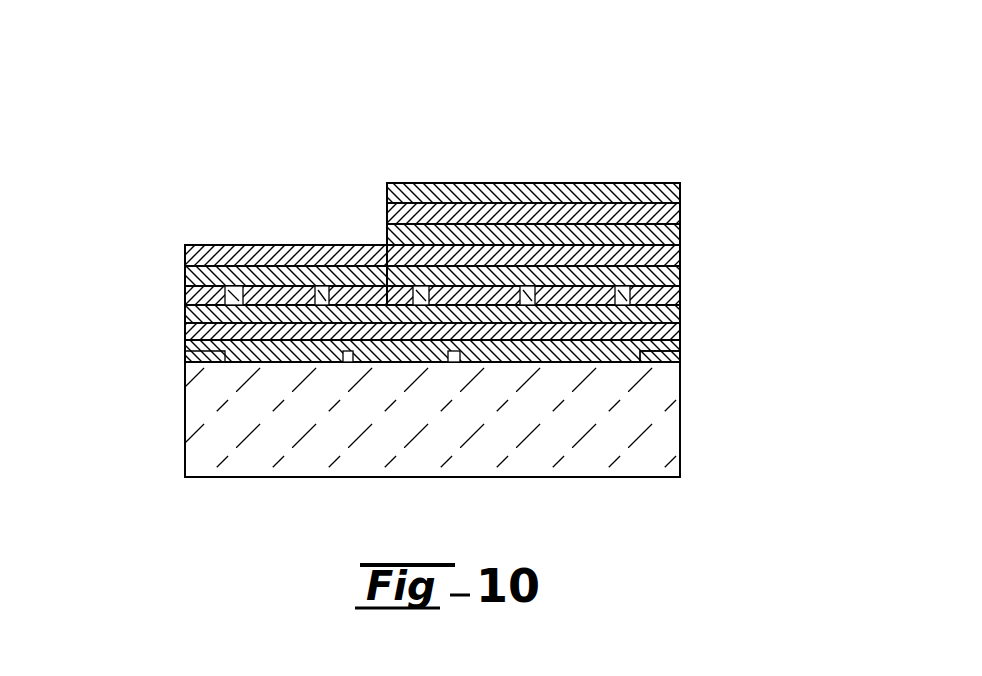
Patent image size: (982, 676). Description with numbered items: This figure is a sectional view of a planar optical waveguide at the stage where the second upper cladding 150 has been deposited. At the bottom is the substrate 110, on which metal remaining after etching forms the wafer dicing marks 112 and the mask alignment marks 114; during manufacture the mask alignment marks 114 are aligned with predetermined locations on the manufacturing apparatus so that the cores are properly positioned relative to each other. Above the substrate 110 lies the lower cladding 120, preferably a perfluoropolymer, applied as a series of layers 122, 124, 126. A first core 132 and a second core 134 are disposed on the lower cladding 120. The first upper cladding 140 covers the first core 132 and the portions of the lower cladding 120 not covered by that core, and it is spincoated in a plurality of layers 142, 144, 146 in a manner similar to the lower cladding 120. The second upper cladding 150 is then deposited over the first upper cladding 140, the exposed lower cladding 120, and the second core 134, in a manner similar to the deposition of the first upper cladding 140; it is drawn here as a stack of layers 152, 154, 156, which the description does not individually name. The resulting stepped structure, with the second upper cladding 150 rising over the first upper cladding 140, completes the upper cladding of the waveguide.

The substrate 110 is at (680, 443).
The wafer dicing marks 112 is at (185, 356).
The mask alignment marks 114 is at (333, 365).
The lower cladding 120 is at (690, 305).
The lower cladding layer 122 is at (680, 388).
The lower cladding layer 124 is at (185, 345).
The lower cladding layer 126 is at (185, 332).
The first core 132 is at (420, 288).
The second core 134 is at (328, 287).
The first upper cladding 140 is at (690, 245).
The first top cladding layer 142 is at (640, 275).
The first top cladding layer 144 is at (540, 258).
The first top cladding layer 146 is at (458, 242).
The second upper cladding 150 is at (690, 183).
The upper layer 152 is at (185, 315).
The upper layer 154 is at (192, 247).
The upper layer 156 is at (219, 267).